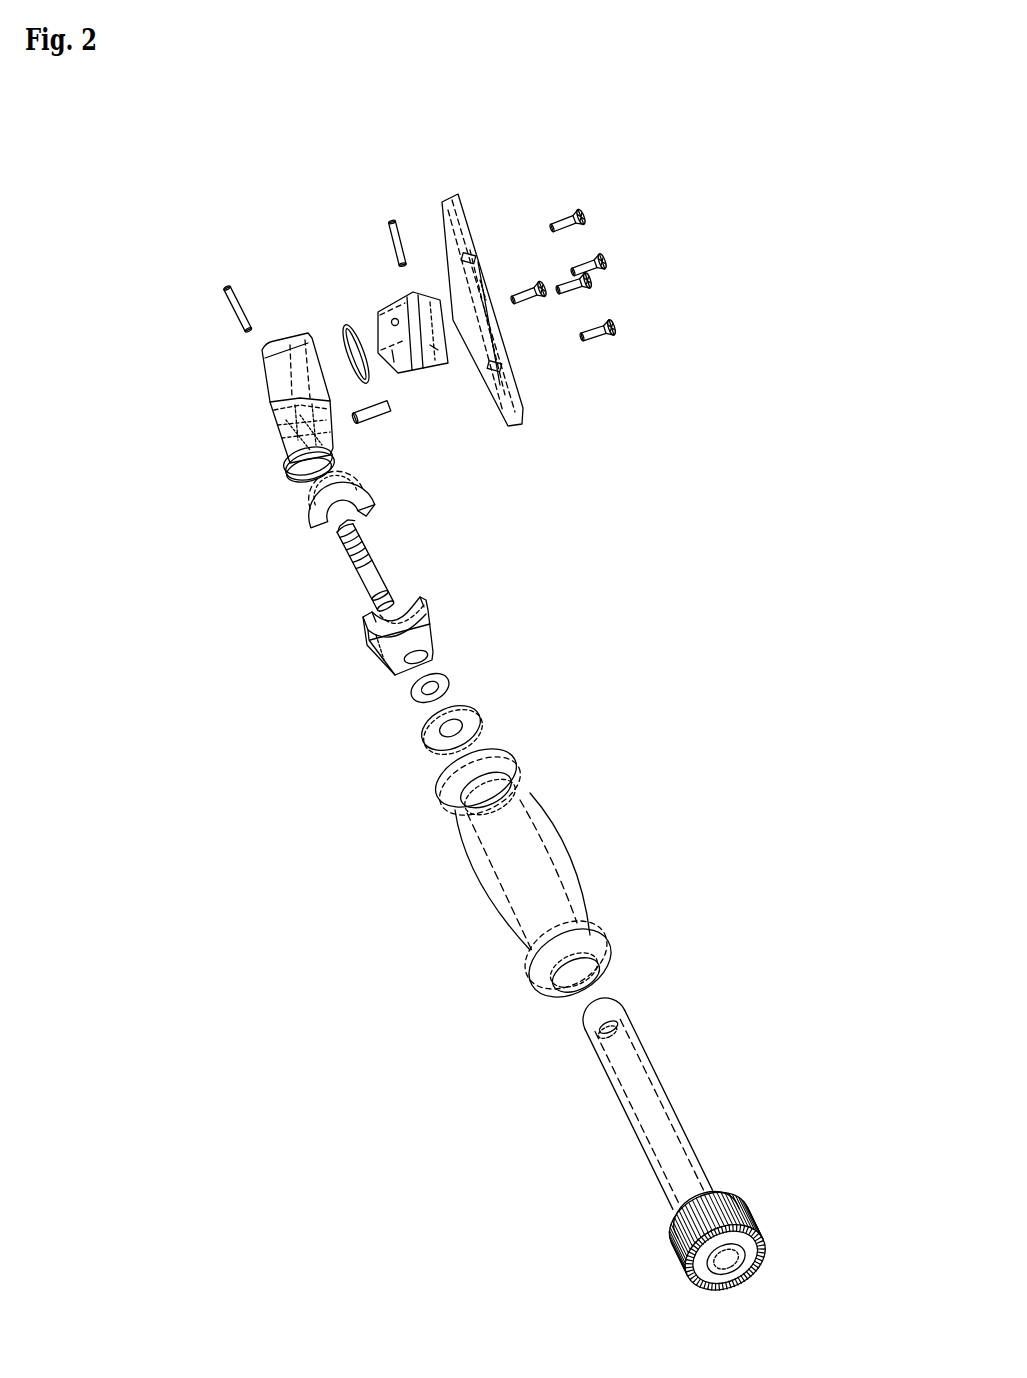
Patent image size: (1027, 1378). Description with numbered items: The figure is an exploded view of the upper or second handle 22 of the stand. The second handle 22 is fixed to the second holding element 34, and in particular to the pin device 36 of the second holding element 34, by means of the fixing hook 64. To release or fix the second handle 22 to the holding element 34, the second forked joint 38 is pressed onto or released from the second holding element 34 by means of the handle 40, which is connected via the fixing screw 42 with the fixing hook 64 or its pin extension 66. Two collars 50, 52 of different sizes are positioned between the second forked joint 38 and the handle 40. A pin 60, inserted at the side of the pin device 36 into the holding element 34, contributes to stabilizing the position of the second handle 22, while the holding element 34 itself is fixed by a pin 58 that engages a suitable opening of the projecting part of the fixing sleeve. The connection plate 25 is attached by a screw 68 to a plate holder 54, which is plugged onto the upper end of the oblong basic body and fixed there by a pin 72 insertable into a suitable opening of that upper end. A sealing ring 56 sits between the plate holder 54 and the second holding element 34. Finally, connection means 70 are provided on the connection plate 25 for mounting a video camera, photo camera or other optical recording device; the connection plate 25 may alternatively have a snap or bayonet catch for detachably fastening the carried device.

The second handle 22 is at (360, 1021).
The connection plate 25 is at (463, 195).
The second holding element 34 is at (268, 338).
The pin device 36 is at (295, 470).
The second forked joint 38 is at (430, 642).
The handle 40 is at (577, 878).
The fixing screw 42 is at (712, 1180).
The collar 50 is at (483, 715).
The collar 52 is at (450, 678).
The plate holder 54 is at (428, 368).
The sealing ring 56 is at (352, 335).
The pin 58 is at (230, 310).
The pin 60 is at (387, 413).
The fixing hook 64 is at (302, 513).
The pin extension 66 is at (348, 560).
The screw 68 is at (553, 295).
The connection means 70 is at (613, 258).
The pin 72 is at (392, 222).